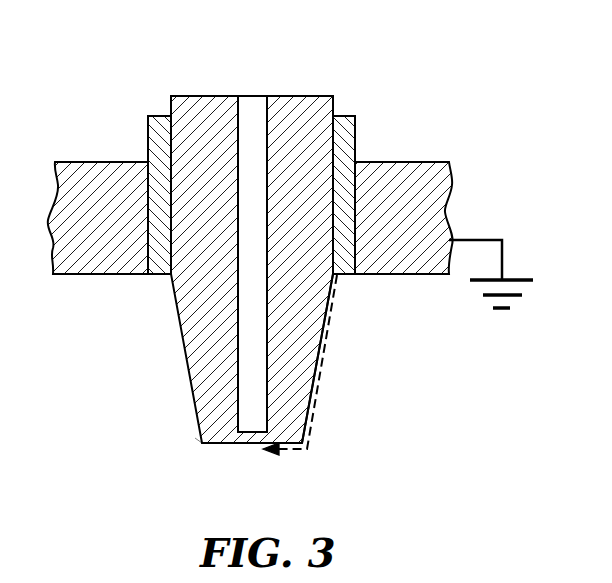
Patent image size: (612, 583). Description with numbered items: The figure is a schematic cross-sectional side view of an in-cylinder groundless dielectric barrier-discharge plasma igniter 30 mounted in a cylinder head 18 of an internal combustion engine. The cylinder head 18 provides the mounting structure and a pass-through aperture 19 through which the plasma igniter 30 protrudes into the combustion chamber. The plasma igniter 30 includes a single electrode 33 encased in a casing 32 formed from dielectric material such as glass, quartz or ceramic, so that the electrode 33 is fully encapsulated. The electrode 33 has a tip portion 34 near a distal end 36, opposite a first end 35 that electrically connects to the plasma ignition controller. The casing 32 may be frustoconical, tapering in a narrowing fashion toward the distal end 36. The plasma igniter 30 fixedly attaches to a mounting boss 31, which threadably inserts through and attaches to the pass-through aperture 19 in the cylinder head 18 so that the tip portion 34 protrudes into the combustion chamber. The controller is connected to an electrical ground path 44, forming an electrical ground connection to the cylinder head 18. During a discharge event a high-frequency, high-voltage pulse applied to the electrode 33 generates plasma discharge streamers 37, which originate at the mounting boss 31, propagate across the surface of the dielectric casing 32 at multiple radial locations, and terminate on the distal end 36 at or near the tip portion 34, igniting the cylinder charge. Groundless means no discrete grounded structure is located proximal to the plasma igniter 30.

The cylinder head 18 is at (451, 197).
The pass-through aperture 19 is at (355, 273).
The plasma igniter 30 is at (163, 340).
The mounting boss 31 is at (356, 133).
The casing 32 is at (215, 445).
The electrode 33 is at (252, 96).
The tip portion 34 is at (253, 437).
The first end 35 is at (108, 102).
The distal end 36 is at (195, 438).
The plasma discharge streamers 37 is at (315, 407).
The electrical ground path 44 is at (514, 277).